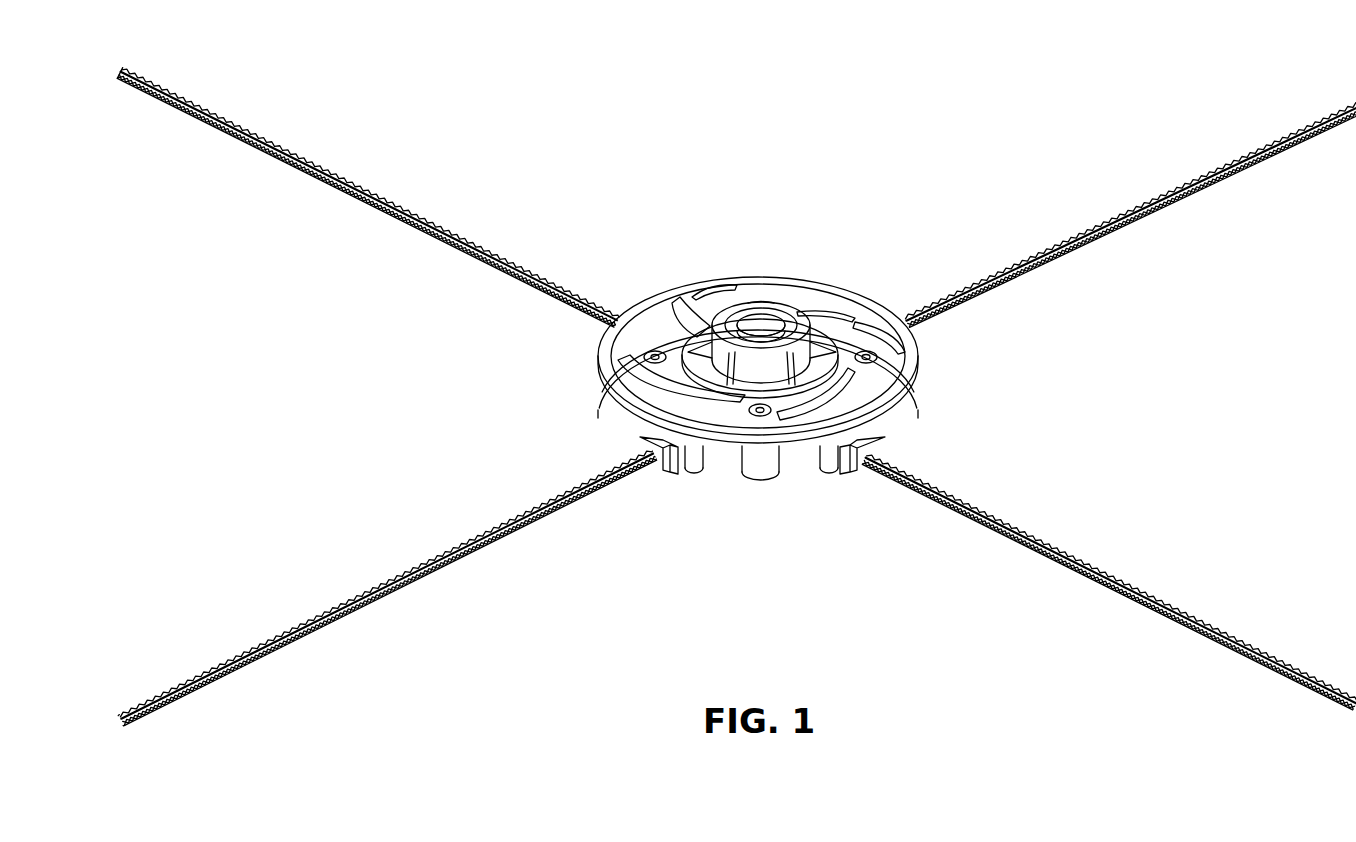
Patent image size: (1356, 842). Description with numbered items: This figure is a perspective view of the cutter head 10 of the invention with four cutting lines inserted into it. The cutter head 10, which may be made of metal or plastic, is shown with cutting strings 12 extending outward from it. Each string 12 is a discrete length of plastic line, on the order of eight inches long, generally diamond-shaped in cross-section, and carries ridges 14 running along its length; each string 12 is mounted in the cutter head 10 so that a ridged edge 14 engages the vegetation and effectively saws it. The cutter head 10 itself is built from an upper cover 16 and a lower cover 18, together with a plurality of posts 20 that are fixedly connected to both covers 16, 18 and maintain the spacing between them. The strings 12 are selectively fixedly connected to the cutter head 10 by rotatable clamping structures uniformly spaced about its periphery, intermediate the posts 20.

The cutter head 10 is at (787, 346).
The cutting string 12 is at (1188, 175).
The ridges 14 is at (420, 571).
The upper cover 16 is at (893, 380).
The lower cover 18 is at (805, 494).
The posts 20 is at (752, 466).